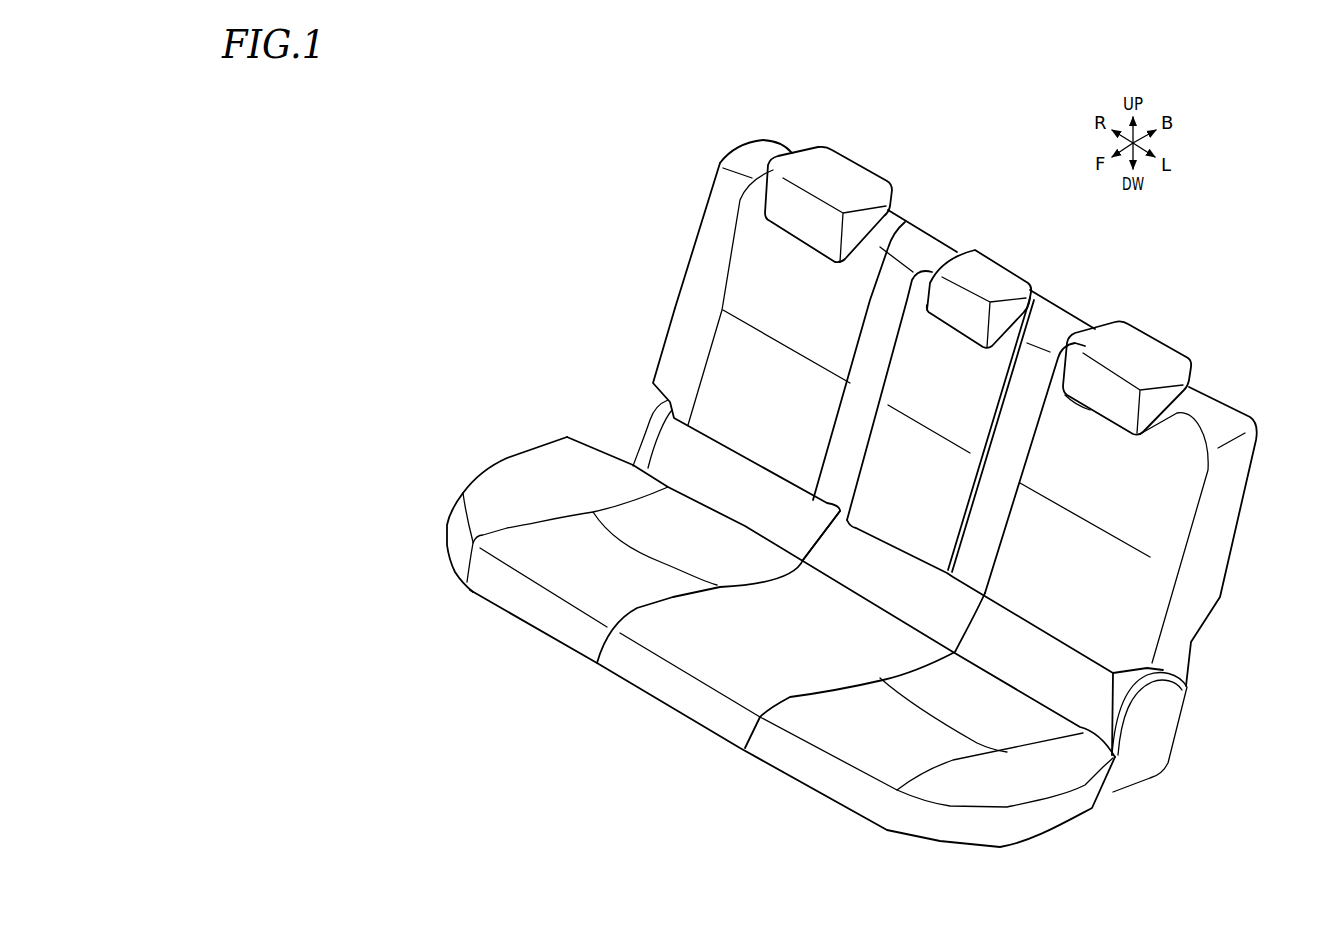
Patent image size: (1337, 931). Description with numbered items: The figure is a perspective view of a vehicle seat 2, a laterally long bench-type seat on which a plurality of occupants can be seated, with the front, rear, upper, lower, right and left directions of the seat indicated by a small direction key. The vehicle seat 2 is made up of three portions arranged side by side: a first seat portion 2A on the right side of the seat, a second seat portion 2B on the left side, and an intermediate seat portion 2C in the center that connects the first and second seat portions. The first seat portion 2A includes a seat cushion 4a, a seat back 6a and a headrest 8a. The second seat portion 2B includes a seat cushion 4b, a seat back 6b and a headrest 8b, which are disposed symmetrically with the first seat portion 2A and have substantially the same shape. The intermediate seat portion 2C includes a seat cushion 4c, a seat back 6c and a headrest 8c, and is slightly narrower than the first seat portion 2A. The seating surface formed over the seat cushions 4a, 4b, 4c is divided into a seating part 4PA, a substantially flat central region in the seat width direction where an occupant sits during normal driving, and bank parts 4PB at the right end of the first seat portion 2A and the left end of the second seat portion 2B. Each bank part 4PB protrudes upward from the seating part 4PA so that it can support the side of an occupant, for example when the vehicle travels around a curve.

The vehicle seat 2 is at (1222, 222).
The first seat portion 2A is at (728, 143).
The second seat portion 2B is at (1225, 390).
The intermediate seat portion 2C is at (988, 248).
The seat cushion 4a is at (534, 616).
The seat cushion 4b is at (815, 778).
The seat cushion 4c is at (674, 697).
The seating part 4PA is at (784, 632).
The bank part 4PB is at (744, 612).
The seat back 6a is at (703, 263).
The seat back 6b is at (1175, 540).
The seat back 6c is at (980, 370).
The headrest 8a is at (847, 174).
The headrest 8b is at (1142, 350).
The headrest 8c is at (1002, 283).